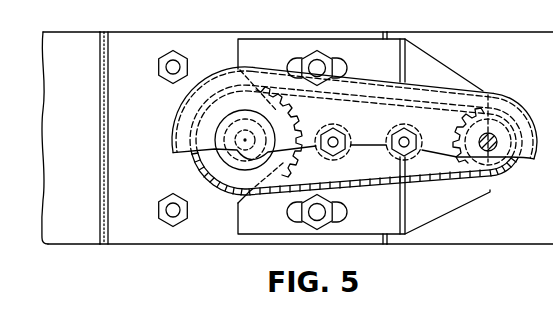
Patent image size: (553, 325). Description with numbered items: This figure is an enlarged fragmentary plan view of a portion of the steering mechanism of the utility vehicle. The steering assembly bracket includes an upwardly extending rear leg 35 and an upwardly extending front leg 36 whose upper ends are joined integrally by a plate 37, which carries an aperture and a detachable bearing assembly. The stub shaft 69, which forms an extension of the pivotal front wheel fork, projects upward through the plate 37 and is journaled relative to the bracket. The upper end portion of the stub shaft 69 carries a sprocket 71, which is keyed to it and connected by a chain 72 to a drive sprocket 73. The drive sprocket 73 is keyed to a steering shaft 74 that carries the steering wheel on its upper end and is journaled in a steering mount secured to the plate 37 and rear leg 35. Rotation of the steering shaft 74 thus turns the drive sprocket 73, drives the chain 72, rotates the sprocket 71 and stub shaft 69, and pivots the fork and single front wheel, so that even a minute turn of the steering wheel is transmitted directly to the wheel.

The rear leg 35 is at (492, 232).
The front leg 36 is at (68, 237).
The plate 37 is at (147, 237).
The stub shaft 69 is at (224, 128).
The sprocket 71 is at (220, 168).
The chain 72 is at (363, 192).
The drive sprocket 73 is at (475, 176).
The steering shaft 74 is at (492, 138).